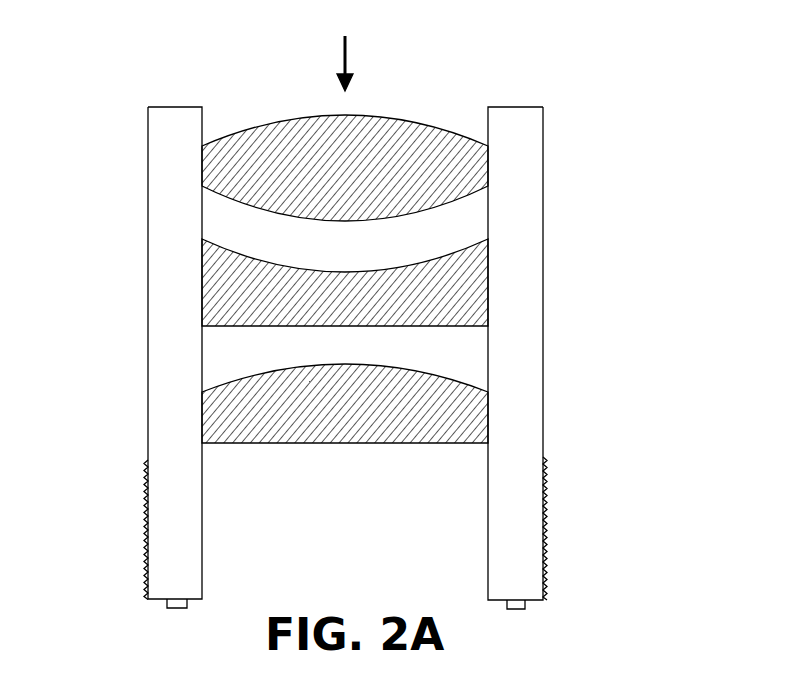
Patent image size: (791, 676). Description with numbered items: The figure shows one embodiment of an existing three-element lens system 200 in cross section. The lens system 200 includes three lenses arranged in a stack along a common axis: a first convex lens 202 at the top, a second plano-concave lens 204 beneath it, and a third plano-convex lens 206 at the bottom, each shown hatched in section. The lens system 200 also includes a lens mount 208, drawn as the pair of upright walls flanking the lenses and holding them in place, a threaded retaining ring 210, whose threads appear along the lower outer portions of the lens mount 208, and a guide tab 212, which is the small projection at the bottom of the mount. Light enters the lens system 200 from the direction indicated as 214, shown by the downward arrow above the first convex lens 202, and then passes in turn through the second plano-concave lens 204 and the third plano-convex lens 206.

The three-element lens system 200 is at (602, 86).
The first convex lens 202 is at (225, 145).
The second plano-concave lens 204 is at (218, 282).
The third plano-convex lens 206 is at (218, 412).
The lens mount 208 is at (543, 303).
The threaded retaining ring 210 is at (545, 513).
The guide tab 212 is at (517, 610).
The direction of light entry 214 is at (348, 44).